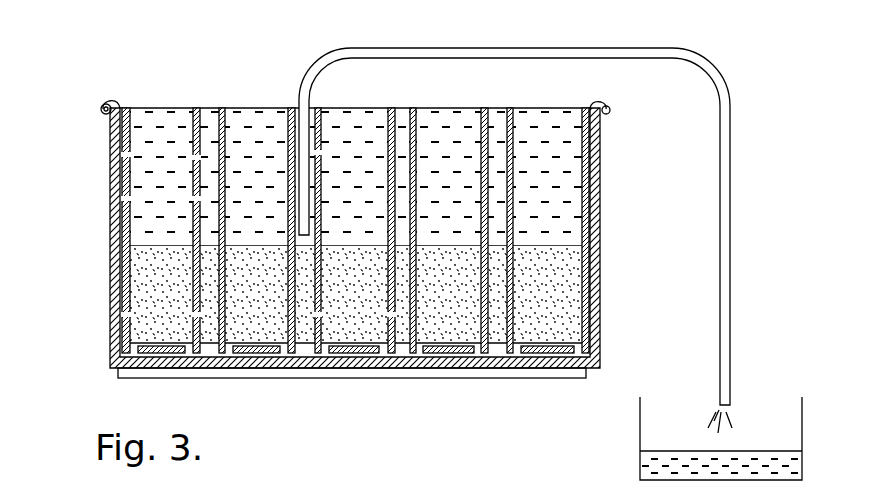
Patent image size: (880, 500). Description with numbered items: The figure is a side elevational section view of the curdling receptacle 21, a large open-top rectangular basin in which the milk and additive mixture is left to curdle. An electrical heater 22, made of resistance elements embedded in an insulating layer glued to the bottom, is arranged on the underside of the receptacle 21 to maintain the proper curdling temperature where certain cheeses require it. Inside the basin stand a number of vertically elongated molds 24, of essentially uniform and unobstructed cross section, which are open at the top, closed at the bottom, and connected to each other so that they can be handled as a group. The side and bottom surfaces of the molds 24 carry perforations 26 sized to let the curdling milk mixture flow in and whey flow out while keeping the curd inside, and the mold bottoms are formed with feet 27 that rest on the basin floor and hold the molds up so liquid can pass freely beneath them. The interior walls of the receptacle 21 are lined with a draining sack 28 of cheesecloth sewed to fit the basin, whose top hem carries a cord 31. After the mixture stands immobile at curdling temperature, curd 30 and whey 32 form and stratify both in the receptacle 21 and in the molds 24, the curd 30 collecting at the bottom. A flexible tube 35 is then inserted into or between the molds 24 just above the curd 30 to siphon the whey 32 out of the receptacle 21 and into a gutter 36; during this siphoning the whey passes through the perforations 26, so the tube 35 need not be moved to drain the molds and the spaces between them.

The curdling receptacle 21 is at (112, 317).
The electrical heater 22 is at (236, 370).
The molds 24 is at (222, 106).
The perforations 26 is at (195, 158).
The feet 27 is at (478, 352).
The draining sack 28 is at (113, 100).
The curd 30 is at (148, 286).
The cord 31 is at (101, 114).
The whey 32 is at (150, 223).
The flexible tube 35 is at (580, 50).
The gutter 36 is at (800, 412).